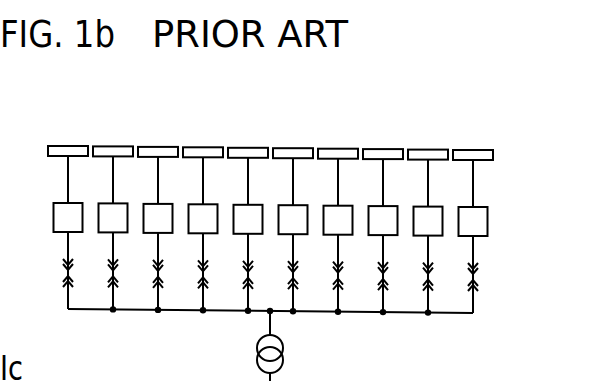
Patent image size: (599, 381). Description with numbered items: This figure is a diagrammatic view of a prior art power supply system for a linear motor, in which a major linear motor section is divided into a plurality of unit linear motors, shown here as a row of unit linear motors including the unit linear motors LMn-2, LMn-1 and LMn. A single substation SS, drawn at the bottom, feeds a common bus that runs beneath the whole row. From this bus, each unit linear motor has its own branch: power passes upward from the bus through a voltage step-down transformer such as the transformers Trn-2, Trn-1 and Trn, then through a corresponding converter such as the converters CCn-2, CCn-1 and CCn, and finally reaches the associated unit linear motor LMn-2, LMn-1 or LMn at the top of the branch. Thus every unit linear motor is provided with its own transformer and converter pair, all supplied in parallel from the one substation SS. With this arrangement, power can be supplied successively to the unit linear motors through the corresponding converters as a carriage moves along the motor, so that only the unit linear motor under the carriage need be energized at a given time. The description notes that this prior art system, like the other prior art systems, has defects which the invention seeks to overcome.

The unit linear motor LMn-2 is at (158, 139).
The unit linear motor LMn-1 is at (205, 139).
The unit linear motor LMn is at (248, 139).
The converter CCn-2 is at (173, 202).
The converter CCn-1 is at (218, 202).
The converter CCn is at (262, 202).
The voltage step-down transformer Trn-2 is at (177, 271).
The voltage step-down transformer Trn-1 is at (219, 271).
The voltage step-down transformer Trn is at (259, 272).
The substation SS is at (282, 358).